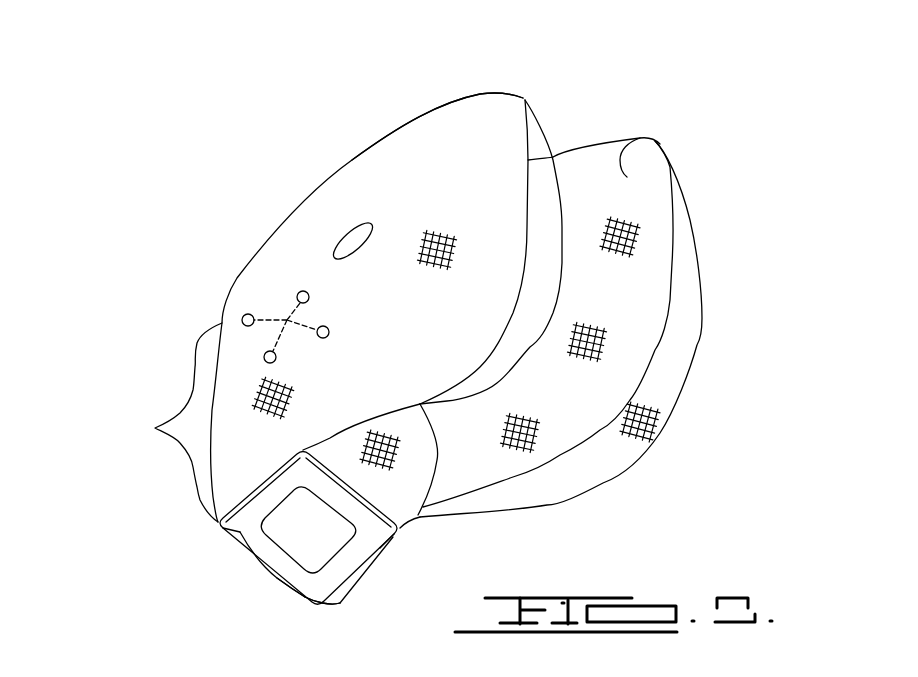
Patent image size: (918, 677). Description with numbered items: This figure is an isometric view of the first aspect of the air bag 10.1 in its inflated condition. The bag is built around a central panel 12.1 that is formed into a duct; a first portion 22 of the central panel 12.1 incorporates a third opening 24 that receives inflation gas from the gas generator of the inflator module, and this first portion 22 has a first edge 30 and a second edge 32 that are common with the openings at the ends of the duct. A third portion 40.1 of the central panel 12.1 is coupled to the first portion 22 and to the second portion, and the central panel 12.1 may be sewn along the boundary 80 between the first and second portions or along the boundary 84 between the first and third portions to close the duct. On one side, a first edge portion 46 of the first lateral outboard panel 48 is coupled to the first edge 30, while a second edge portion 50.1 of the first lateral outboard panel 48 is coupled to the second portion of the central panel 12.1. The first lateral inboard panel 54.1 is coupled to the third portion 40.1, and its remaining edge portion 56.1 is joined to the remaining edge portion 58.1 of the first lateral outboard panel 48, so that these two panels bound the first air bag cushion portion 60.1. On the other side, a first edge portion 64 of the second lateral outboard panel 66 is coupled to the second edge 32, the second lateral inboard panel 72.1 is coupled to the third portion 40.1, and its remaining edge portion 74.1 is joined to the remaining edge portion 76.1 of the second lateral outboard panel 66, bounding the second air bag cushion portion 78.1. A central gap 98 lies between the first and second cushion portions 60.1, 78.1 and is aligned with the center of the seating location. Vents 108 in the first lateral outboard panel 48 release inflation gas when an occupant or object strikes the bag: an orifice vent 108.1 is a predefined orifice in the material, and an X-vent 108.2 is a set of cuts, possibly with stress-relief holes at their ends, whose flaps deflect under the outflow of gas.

The air bag 10.1 is at (150, 195).
The first air bag cushion portion 60.1 is at (350, 140).
The first lateral outboard panel 48 is at (412, 160).
The remaining edge portion of the first lateral inboard panel 56.1 is at (555, 157).
The remaining edge portion of the first lateral outboard panel 58.1 is at (530, 185).
The first lateral inboard panel 54.1 is at (538, 285).
The second lateral inboard panel 72.1 is at (640, 140).
The central gap 98 is at (580, 140).
The second lateral outboard panel 66 is at (697, 343).
The second air bag cushion portion 78.1 is at (673, 451).
The remaining edge portion of the second lateral inboard panel 74.1 is at (673, 255).
The remaining edge portion of the second lateral outboard panel 76.1 is at (667, 287).
The vents 108 is at (223, 262).
The orifice vent 108.1 is at (353, 227).
The X-vent 108.2 is at (273, 303).
The second edge portion of the first lateral outboard panel 50.1 is at (155, 429).
The boundary between the first and third portions 84 is at (347, 473).
The first edge portion of the first lateral outboard panel 46 is at (300, 448).
The third opening 24 is at (308, 530).
The first edge of the first portion 30 is at (243, 531).
The first portion of the central panel 22 is at (248, 562).
The boundary between the first and second portions 80 is at (287, 582).
The second edge of the first portion 32 is at (308, 587).
The first edge portion of the second lateral outboard panel 64 is at (400, 537).
The central panel 12.1 is at (478, 538).
The third portion of the central panel 40.1 is at (416, 520).